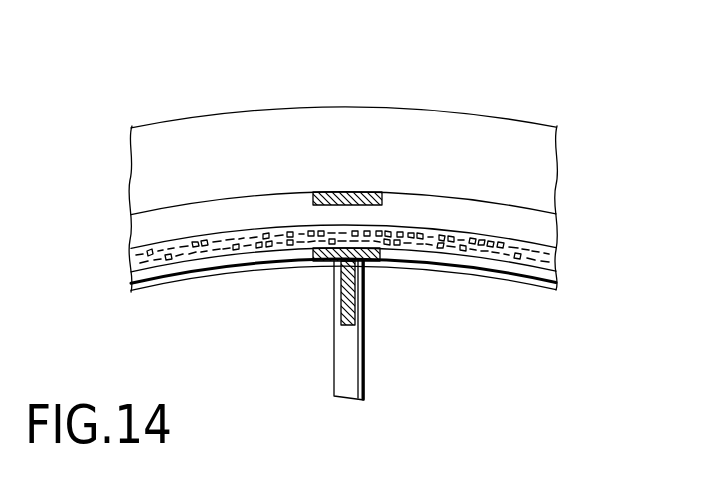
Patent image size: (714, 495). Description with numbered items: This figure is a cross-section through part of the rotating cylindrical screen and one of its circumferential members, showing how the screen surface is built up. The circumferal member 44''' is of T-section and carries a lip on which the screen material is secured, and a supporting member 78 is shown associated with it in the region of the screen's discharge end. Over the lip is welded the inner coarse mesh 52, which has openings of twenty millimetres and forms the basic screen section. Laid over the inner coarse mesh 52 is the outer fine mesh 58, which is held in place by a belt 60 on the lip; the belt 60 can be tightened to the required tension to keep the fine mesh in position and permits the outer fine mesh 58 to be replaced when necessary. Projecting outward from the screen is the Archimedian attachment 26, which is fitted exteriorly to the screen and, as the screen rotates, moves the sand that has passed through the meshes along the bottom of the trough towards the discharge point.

The circumferential member 44''' is at (343, 148).
The supporting member 78 is at (343, 193).
The belt 60 is at (418, 226).
The outer fine mesh 58 is at (458, 238).
The inner coarse mesh 52 is at (400, 262).
The Archimedian attachment 26 is at (336, 290).